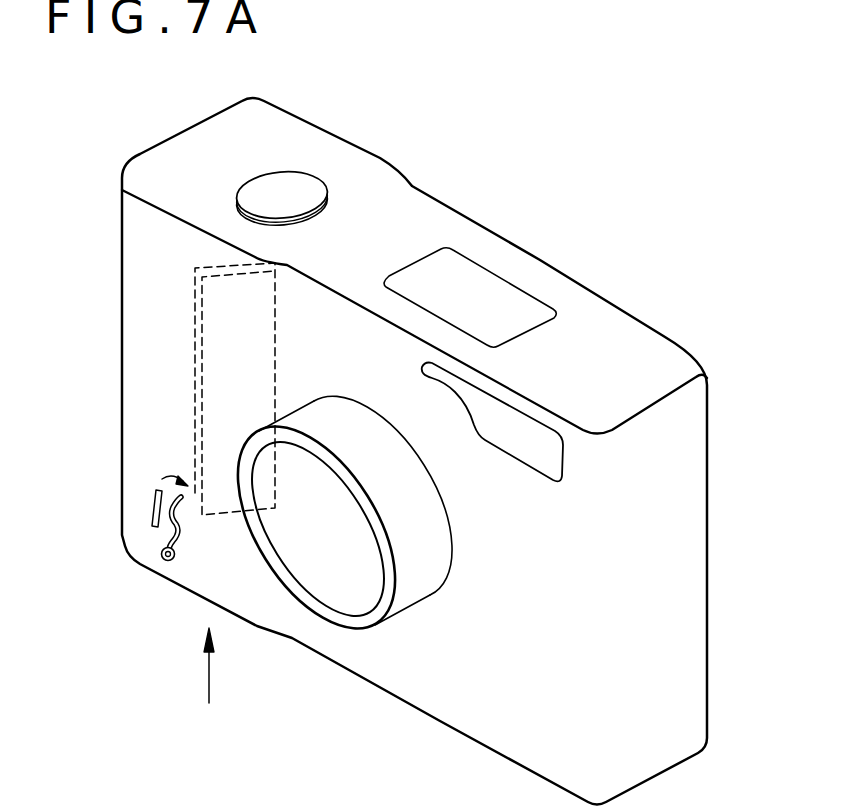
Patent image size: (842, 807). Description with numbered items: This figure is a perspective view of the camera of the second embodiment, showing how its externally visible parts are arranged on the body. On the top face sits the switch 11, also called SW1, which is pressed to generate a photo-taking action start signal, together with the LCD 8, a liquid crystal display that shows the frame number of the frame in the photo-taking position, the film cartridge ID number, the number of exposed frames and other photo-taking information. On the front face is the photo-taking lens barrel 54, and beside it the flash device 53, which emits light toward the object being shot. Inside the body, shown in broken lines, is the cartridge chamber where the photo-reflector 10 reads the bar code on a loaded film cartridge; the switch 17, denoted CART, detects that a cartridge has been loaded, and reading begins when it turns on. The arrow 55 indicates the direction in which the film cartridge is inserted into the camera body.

The LCD 8 is at (493, 297).
The photo-reflector 10 is at (195, 312).
The switch 11 is at (298, 188).
The switch 17 is at (156, 534).
The flash device 53 is at (558, 458).
The photo-taking lens barrel 54 is at (340, 593).
The arrow 55 is at (209, 675).